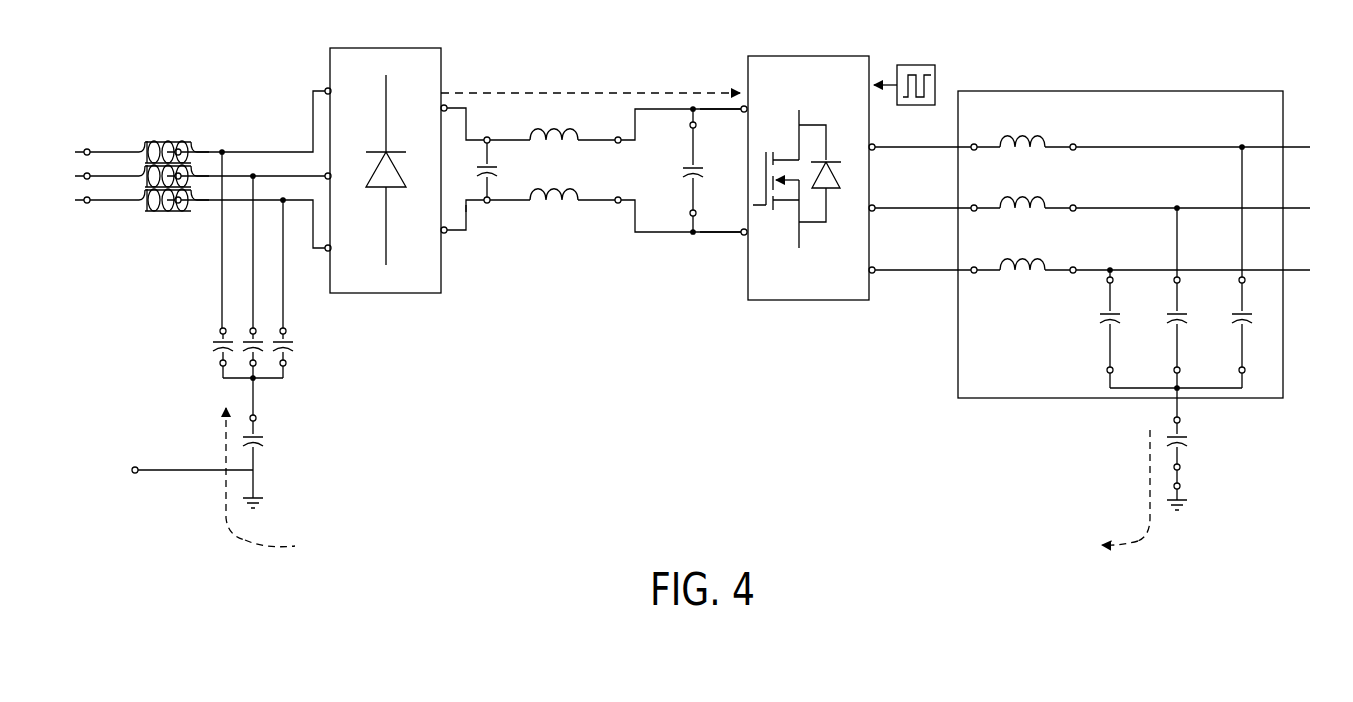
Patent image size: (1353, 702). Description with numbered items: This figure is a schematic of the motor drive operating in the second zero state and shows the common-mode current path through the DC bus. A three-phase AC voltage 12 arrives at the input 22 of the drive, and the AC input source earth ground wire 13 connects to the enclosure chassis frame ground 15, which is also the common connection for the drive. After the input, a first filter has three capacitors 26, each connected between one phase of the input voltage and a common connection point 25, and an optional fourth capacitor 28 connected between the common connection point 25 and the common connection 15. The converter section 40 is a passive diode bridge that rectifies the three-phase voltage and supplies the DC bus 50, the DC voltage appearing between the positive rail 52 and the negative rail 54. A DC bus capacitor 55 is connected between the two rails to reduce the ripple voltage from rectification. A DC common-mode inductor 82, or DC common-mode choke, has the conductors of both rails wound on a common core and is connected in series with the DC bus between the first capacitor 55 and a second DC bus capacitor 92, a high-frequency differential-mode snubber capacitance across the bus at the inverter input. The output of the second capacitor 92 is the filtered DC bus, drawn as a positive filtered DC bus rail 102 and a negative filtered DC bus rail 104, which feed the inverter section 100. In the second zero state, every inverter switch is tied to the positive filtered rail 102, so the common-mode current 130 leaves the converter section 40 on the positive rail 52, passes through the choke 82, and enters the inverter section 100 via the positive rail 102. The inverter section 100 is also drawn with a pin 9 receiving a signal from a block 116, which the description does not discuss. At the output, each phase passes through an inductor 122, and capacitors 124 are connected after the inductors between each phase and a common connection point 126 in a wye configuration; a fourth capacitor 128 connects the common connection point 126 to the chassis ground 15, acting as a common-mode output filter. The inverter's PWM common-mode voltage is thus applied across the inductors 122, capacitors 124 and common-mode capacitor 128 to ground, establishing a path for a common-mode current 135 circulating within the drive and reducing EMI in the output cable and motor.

The AC voltage 12 is at (82, 145).
The input 22 is at (178, 140).
The capacitor 26 is at (276, 324).
The common connection point 25 is at (256, 380).
The earth ground wire 13 is at (163, 465).
The fourth capacitor 28 is at (268, 447).
The enclosure chassis frame ground 15 is at (268, 507).
The common-mode current 135 is at (236, 540).
The converter section 40 is at (392, 48).
The positive rail 52 is at (451, 107).
The DC bus 50 is at (455, 238).
The negative rail 54 is at (468, 210).
The DC bus capacitor 55 is at (472, 165).
The DC common-mode inductor 82 is at (560, 212).
The second DC bus capacitor 92 is at (682, 186).
The positive filtered DC bus rail 102 is at (717, 112).
The negative filtered DC bus rail 104 is at (720, 234).
The common-mode current 130 is at (621, 92).
The inverter section 100 is at (815, 56).
The control input pin 9 is at (872, 87).
The PWM controller 116 is at (915, 65).
The inductor 122 is at (1044, 135).
The capacitor 124 is at (1167, 328).
The common connection point 126 is at (1182, 392).
The fourth capacitor 128 is at (1194, 447).